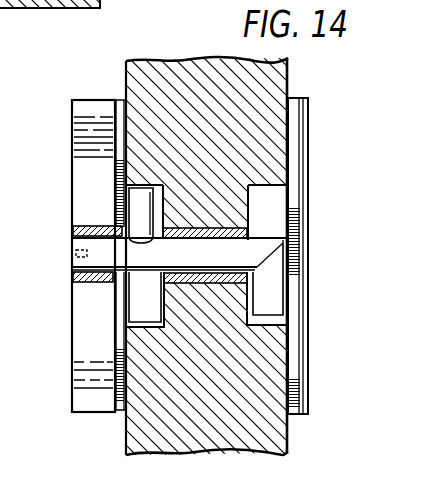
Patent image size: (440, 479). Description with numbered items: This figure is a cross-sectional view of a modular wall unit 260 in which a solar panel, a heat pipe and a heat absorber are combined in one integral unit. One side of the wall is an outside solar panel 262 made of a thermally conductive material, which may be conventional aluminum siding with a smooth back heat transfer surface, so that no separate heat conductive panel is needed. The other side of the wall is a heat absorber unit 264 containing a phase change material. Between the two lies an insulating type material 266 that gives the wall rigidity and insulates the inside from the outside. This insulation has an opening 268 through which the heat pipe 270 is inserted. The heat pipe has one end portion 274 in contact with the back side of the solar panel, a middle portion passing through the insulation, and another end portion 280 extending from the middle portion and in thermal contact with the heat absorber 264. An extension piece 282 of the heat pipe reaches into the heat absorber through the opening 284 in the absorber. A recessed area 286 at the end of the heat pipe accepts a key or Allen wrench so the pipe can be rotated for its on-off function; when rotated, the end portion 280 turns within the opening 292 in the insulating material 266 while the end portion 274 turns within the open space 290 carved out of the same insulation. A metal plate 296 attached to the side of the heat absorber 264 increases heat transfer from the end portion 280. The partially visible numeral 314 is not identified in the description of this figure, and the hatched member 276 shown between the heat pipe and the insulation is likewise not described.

The modular wall unit 260 is at (191, 70).
The outside solar panel 262 is at (297, 121).
The heat absorber unit 264 is at (73, 115).
The insulating type material 266 is at (220, 196).
The opening 268 is at (216, 232).
The heat pipe 270 is at (274, 256).
The end portion 274 is at (272, 299).
The lower gasket 276 is at (198, 256).
The other end portion 280 is at (144, 206).
The extension piece 282 is at (90, 242).
The opening 284 is at (74, 279).
The recessed area 286 is at (75, 253).
The open space 290 is at (262, 326).
The opening 292 is at (146, 328).
The metal plate 296 is at (127, 107).
The shaft 314 is at (179, 358).